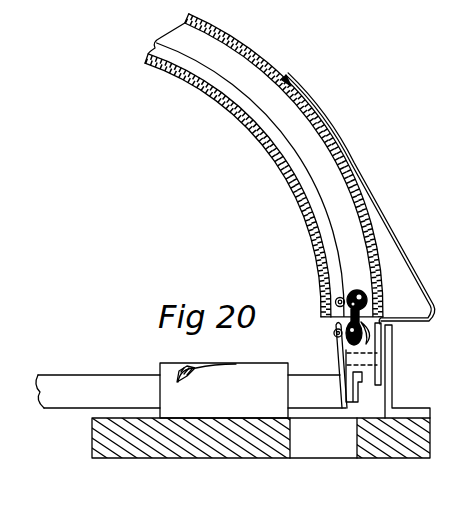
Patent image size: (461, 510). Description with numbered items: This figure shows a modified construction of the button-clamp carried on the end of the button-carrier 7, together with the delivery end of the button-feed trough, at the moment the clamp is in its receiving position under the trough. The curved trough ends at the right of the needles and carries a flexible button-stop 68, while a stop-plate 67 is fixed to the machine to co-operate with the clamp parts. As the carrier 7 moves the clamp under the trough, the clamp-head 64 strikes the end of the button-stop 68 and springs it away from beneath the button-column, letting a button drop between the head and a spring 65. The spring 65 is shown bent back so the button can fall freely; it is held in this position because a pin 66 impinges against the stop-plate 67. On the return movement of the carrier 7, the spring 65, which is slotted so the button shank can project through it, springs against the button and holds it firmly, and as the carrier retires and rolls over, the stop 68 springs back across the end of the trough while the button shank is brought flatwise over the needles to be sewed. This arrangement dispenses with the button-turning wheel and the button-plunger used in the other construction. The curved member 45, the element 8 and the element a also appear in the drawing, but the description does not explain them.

The curved arm 45 is at (264, 165).
The flexible button-stop 68 is at (364, 198).
The clamp-head 64 is at (355, 361).
The spring 65 is at (336, 338).
The pin 66 is at (379, 364).
The stop-plate 67 is at (392, 379).
The button-carrier 7 is at (191, 391).
The block 8 is at (224, 390).
The spring finger a is at (206, 382).